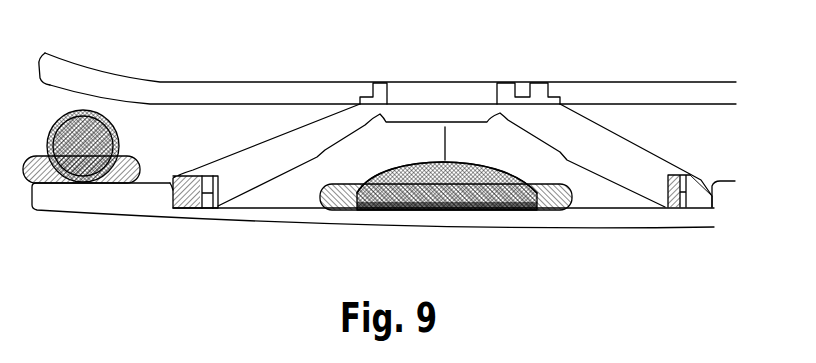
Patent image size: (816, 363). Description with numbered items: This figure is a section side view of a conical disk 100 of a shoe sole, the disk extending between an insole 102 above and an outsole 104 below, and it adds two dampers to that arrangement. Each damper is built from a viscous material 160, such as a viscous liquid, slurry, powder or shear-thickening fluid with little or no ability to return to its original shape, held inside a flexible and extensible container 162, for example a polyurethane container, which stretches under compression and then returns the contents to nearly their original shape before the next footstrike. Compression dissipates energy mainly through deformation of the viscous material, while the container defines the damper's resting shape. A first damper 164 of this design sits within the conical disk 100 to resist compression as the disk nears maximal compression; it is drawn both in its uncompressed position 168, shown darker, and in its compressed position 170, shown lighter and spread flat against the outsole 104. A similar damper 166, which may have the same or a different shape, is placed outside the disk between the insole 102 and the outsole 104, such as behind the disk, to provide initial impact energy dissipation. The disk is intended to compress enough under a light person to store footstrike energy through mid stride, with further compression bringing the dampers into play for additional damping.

The conical disk 100 is at (634, 160).
The insole 102 is at (137, 90).
The outsole 104 is at (712, 220).
The viscous material 160 is at (418, 158).
The flexible extensible container 162 is at (393, 173).
The first damper 164 is at (400, 197).
The damper 166 is at (82, 142).
The uncompressed position 168 is at (492, 170).
The compressed position 170 is at (569, 197).